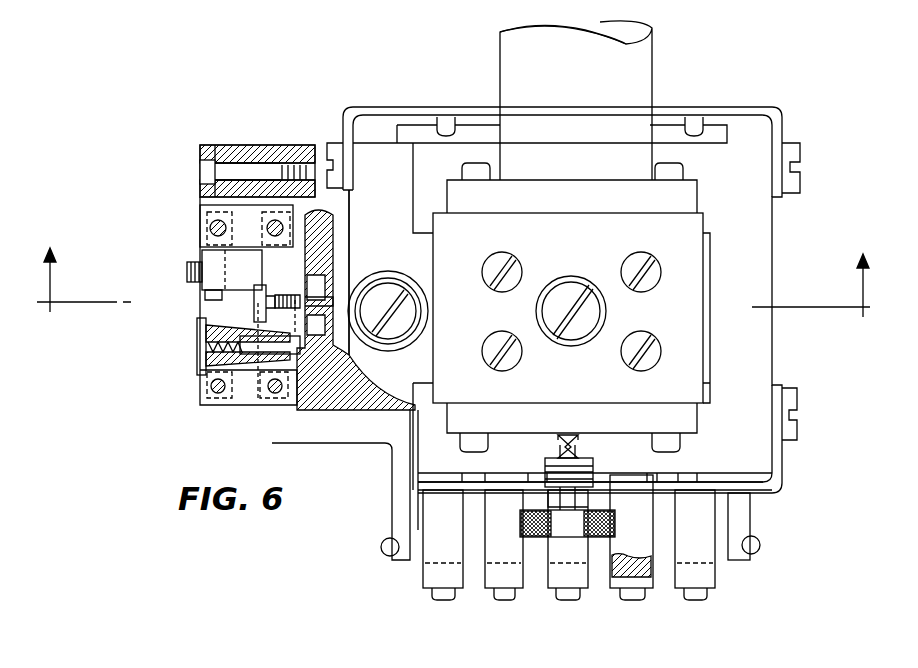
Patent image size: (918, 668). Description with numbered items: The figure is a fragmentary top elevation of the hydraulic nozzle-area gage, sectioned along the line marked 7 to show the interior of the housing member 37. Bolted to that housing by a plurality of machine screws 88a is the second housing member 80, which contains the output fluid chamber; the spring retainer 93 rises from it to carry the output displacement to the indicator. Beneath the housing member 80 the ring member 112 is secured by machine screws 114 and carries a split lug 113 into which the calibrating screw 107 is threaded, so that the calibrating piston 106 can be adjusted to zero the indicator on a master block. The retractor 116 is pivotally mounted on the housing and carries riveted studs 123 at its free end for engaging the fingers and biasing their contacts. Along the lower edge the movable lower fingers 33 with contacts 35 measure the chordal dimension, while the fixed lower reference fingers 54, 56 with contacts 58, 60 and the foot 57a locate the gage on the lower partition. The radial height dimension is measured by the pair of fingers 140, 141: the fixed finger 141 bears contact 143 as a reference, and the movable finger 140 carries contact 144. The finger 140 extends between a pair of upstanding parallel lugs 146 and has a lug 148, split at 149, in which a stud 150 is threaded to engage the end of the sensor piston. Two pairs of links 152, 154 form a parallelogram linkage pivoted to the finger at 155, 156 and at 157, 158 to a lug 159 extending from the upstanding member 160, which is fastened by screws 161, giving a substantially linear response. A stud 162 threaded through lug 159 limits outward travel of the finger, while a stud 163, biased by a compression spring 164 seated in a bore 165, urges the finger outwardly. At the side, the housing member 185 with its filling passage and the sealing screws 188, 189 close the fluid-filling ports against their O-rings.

The section line 7- 7 is at (453, 271).
The lower finger 33 is at (516, 584).
The contact 35 is at (505, 601).
The housing member 37 is at (392, 220).
The fixed lower reference finger 54 is at (455, 584).
The fixed lower reference finger 56 is at (706, 584).
The foot 57a is at (640, 552).
The contact 58 is at (437, 600).
The contact 60 is at (695, 600).
The second housing member 80 is at (610, 396).
The machine screws 88a is at (622, 270).
The spring retainer 93 is at (592, 116).
The calibrating piston 106 is at (581, 443).
The calibrating screw 107 is at (600, 520).
The ring member 112 is at (648, 429).
The split lug 113 is at (594, 472).
The machine screws 114 is at (484, 445).
The retractor 116 is at (700, 108).
The riveted studs 123 is at (445, 117).
The movable finger 140 is at (390, 503).
The finger 141 is at (742, 520).
The contact 143 is at (760, 547).
The contact 144 is at (380, 547).
The upstanding parallel lugs 146 is at (200, 395).
The lug 148 is at (245, 262).
The split 149 is at (318, 268).
The stud 150 is at (254, 310).
The links 152 is at (205, 222).
The links 154 is at (335, 190).
The pivot 155 is at (216, 394).
The pivot 156 is at (272, 394).
The pivot 157 is at (210, 232).
The pivot 158 is at (283, 234).
The lug 159 is at (205, 295).
The upstanding member 160 is at (262, 145).
The screws 161 is at (215, 172).
The stud 162 is at (187, 272).
The stud 163 is at (320, 371).
The compression spring 164 is at (210, 346).
The bore 165 is at (197, 360).
The housing member 185 is at (392, 286).
The screw 188 is at (400, 335).
The screw 189 is at (555, 338).